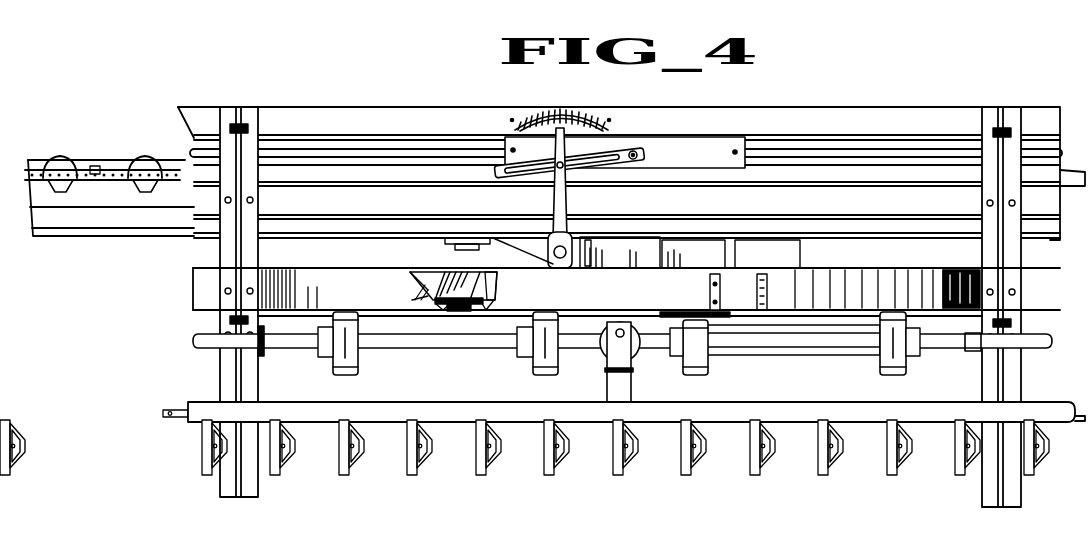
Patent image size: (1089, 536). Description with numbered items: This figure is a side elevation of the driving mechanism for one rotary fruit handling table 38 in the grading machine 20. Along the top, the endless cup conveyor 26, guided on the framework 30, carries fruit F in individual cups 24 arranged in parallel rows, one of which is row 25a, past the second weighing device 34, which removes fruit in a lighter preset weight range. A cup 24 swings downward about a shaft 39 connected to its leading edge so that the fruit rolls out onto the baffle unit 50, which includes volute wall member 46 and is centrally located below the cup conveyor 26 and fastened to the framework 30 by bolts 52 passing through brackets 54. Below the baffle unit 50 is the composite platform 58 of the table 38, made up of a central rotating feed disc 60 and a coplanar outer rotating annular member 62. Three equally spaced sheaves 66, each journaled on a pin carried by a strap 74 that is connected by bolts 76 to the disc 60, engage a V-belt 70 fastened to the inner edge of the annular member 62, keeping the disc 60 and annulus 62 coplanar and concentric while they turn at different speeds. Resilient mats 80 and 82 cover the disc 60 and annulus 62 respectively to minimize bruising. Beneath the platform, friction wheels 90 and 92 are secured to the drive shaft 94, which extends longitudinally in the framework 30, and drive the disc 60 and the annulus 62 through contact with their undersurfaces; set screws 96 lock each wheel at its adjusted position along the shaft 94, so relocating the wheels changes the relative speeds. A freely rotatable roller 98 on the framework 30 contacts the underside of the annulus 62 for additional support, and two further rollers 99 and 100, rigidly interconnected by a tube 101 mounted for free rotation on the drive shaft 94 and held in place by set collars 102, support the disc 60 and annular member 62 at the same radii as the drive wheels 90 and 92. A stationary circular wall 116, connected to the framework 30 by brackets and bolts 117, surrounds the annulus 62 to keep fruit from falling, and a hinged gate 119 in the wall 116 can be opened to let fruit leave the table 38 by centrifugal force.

The grading machine 20 is at (852, 100).
The cups 24 is at (145, 195).
The row of cups 25a is at (40, 166).
The cup conveyor 26 is at (108, 160).
The framework 30 is at (186, 158).
The second weighing device 34 is at (612, 145).
The rotary table 38 is at (332, 272).
The shaft 39 is at (75, 190).
The volute wall member 46 is at (485, 280).
The baffle unit 50 is at (438, 270).
The bolts 52 is at (480, 244).
The brackets 54 is at (500, 262).
The composite platform 58 is at (412, 288).
The feed disc 60 is at (484, 310).
The annular member 62 is at (418, 306).
The sheaves 66 is at (462, 310).
The V-belt 70 is at (441, 310).
The strap 74 is at (680, 314).
The bolts 76 is at (730, 320).
The resilient mat 80 is at (498, 296).
The resilient mat 82 is at (415, 296).
The friction wheel 90 is at (550, 360).
The friction wheel 92 is at (340, 350).
The drive shaft 94 is at (208, 348).
The set screws 96 is at (328, 340).
The roller 98 is at (601, 328).
The roller 99 is at (695, 370).
The roller 100 is at (885, 346).
The tube 101 is at (795, 348).
The set collars 102 is at (675, 356).
The circular wall 116 is at (334, 290).
The brackets and bolts 117 is at (238, 275).
The hinged gate 119 is at (838, 285).
The fruit F is at (68, 158).